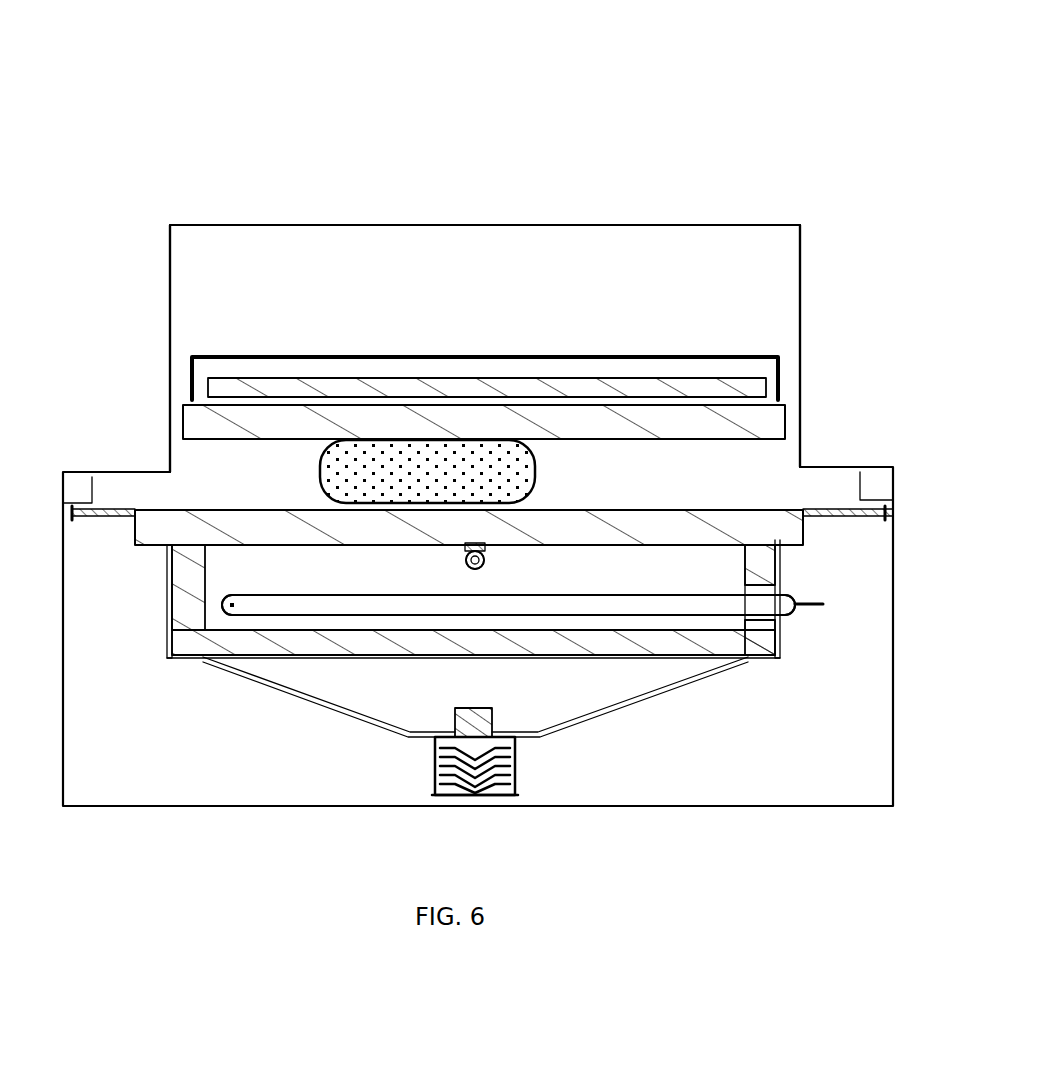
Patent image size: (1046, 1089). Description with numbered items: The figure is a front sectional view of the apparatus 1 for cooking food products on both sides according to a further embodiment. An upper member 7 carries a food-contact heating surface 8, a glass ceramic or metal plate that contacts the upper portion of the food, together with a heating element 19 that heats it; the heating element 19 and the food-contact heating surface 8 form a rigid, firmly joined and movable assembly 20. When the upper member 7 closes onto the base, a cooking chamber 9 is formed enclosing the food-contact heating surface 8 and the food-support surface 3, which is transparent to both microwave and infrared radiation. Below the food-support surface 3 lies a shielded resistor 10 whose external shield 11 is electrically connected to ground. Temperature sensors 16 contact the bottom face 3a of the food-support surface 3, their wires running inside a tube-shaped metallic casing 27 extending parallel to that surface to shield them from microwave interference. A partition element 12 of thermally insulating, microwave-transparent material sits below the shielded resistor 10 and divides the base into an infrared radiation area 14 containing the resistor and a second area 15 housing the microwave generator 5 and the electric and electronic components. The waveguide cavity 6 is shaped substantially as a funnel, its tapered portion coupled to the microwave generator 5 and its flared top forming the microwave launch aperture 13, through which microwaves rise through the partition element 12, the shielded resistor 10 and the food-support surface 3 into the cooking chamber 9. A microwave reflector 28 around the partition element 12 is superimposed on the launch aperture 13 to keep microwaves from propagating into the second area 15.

The apparatus 1 is at (672, 86).
The food-support surface 3 is at (188, 532).
The bottom face 3a is at (268, 556).
The microwave generator 5 is at (435, 762).
The waveguide cavity 6 is at (365, 690).
The upper member 7 is at (204, 223).
The food-contact heating surface 8 is at (763, 423).
The cooking chamber 9 is at (623, 483).
The shielded resistor 10 is at (280, 588).
The external shield 11 is at (587, 607).
The partition element 12 is at (170, 656).
The microwave launch aperture 13 is at (677, 657).
The infrared radiation area 14 is at (800, 572).
The second area 15 is at (793, 697).
The temperature sensors 16 is at (488, 547).
The heating element 19 is at (557, 388).
The assembly 20 is at (787, 389).
The metallic casing 27 is at (463, 557).
The microwave reflector 28 is at (165, 582).